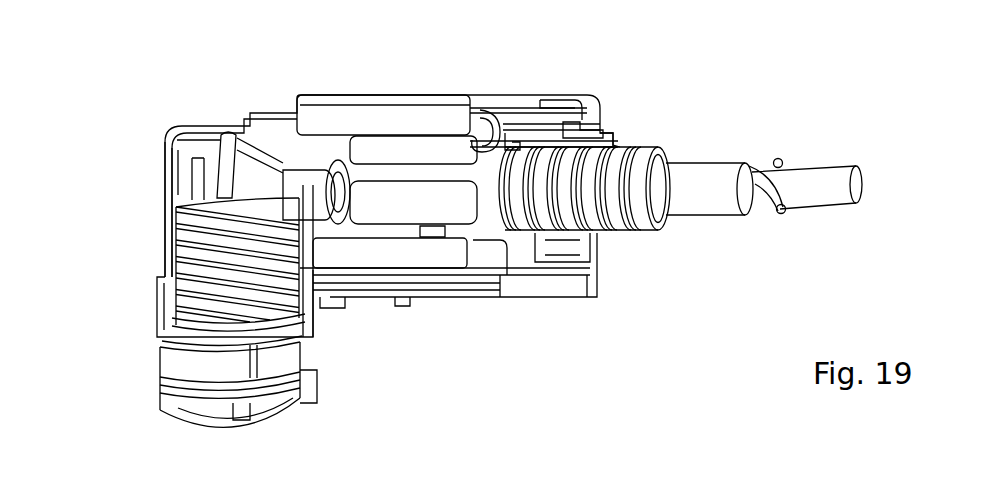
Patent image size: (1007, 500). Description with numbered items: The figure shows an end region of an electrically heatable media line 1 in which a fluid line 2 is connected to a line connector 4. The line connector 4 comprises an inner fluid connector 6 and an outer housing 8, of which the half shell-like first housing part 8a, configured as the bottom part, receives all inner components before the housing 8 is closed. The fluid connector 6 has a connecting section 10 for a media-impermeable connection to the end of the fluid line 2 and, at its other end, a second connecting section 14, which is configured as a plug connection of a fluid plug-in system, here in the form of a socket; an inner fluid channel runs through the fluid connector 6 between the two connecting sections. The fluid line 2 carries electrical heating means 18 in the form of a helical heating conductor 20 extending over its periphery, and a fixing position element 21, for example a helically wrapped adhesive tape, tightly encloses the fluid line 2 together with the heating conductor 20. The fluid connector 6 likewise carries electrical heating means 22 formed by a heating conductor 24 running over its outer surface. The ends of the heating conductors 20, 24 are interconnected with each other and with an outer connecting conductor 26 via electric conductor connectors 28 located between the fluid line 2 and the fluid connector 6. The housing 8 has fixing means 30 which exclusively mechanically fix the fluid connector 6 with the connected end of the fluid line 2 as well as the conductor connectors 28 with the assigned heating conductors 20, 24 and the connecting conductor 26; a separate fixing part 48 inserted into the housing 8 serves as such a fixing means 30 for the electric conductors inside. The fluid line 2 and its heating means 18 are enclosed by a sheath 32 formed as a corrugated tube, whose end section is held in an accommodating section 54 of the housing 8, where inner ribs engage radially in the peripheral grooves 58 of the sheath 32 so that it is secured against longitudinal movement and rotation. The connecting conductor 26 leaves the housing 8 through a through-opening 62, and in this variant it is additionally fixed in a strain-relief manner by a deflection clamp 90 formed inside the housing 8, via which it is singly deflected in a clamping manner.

The electrically heatable media line 1 is at (471, 240).
The fluid line 2 is at (830, 178).
The line connector 4 is at (212, 108).
The fluid connector 6 is at (247, 186).
The housing 8 is at (157, 208).
The first housing part 8a is at (180, 183).
The connecting section 10 is at (340, 188).
The second connecting section 14 is at (165, 410).
The electrical heating means 18 is at (770, 207).
The heating conductor 20 is at (489, 116).
The fixing position element 21 is at (713, 193).
The electrical heating means 22 is at (205, 268).
The heating conductor 24 is at (198, 172).
The connecting conductor 26 is at (613, 118).
The conductor connector 28 is at (377, 120).
The fixing means 30 is at (415, 93).
The sheath 32 is at (634, 167).
The fixing part 48 is at (453, 148).
The accommodating section 54 is at (589, 237).
The peripheral groove 58 is at (558, 226).
The through-opening 62 is at (580, 123).
The deflection clamp 90 is at (553, 98).